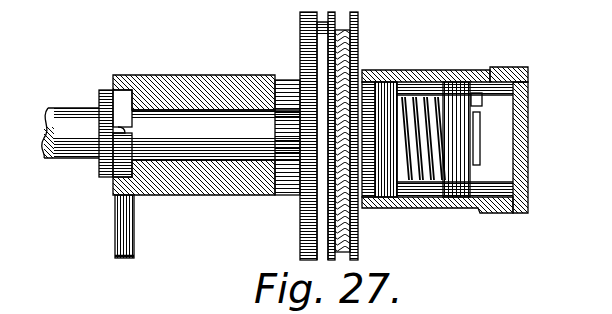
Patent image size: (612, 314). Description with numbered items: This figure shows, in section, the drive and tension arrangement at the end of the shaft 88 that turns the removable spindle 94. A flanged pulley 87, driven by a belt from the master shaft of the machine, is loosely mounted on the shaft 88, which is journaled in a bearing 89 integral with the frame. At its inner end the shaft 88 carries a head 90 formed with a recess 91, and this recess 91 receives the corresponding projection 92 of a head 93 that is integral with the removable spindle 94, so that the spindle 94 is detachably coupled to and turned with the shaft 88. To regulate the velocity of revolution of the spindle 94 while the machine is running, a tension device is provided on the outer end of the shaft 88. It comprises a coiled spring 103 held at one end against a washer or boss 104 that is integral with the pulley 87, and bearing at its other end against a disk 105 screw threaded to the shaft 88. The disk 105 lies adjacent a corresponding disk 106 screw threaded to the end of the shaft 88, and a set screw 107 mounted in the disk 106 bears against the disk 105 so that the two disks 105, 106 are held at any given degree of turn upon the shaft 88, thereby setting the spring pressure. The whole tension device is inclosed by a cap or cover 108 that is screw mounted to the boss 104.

The flanged pulley 87 is at (367, 53).
The shaft 88 is at (217, 110).
The bearing 89 is at (196, 113).
The head 90 is at (123, 100).
The recess 91 is at (143, 197).
The projection 92 is at (117, 131).
The head 93 is at (108, 89).
The removable spindle 94 is at (62, 120).
The coiled spring 103 is at (438, 92).
The washer or boss 104 is at (412, 64).
The disk 105 is at (432, 198).
The disk 106 is at (512, 72).
The set screw 107 is at (482, 105).
The cap or cover 108 is at (528, 190).